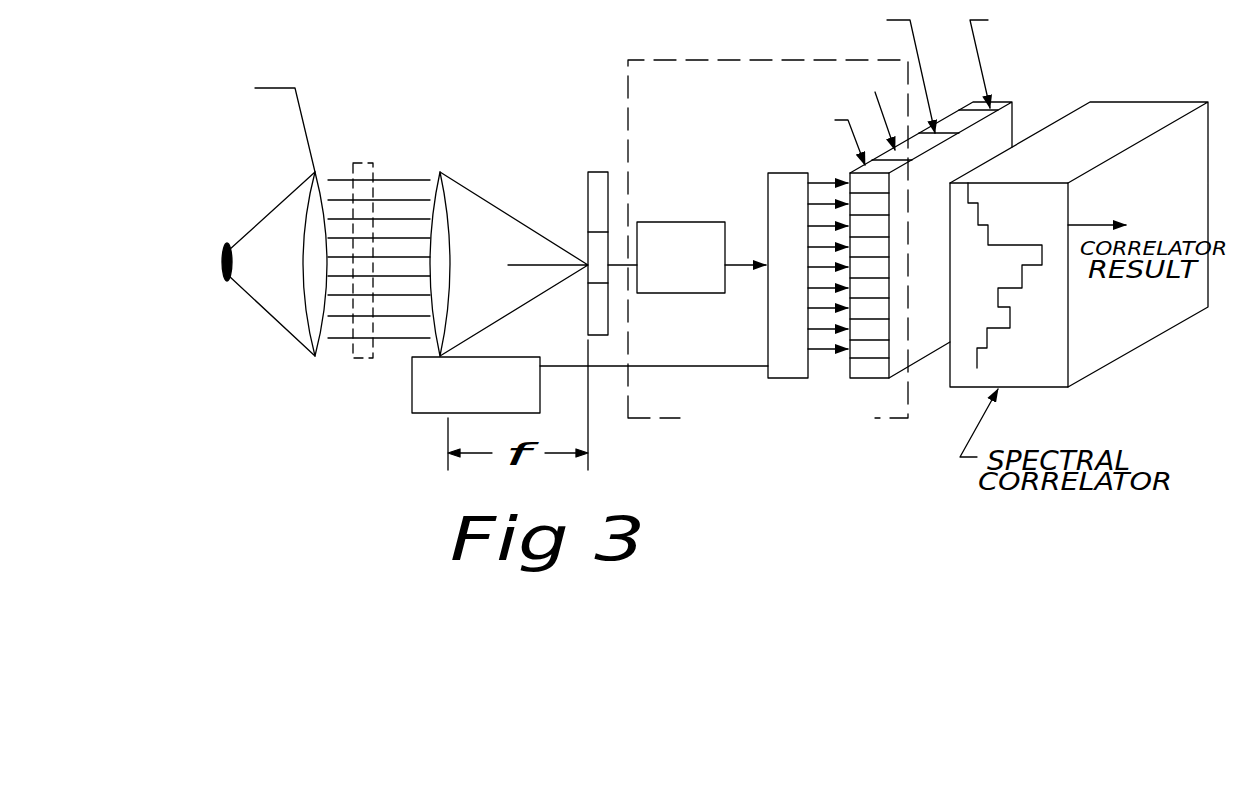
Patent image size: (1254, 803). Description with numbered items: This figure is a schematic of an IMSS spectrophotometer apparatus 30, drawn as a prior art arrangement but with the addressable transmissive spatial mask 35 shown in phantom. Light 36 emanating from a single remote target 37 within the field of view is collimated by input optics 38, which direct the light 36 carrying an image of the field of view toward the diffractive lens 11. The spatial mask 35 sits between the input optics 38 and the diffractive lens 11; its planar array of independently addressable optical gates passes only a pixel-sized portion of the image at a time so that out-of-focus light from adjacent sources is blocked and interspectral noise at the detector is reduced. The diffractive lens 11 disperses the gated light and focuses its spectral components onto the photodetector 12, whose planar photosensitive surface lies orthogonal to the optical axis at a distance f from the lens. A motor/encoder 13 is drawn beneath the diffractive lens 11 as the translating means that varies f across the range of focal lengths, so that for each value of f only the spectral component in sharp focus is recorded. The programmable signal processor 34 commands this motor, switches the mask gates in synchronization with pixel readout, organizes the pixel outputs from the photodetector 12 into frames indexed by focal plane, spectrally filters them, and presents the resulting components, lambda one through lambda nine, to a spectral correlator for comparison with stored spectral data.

The diffractive lens 11 is at (441, 172).
The photodetector 12 is at (593, 172).
The motor/encoder 13 is at (427, 413).
The apparatus 30 is at (607, 62).
The programmable signal processor 34 is at (690, 187).
The addressable transmissive spatial mask 35 is at (357, 360).
The light 36 is at (258, 222).
The remote target 37 is at (226, 281).
The input optics 38 is at (315, 357).